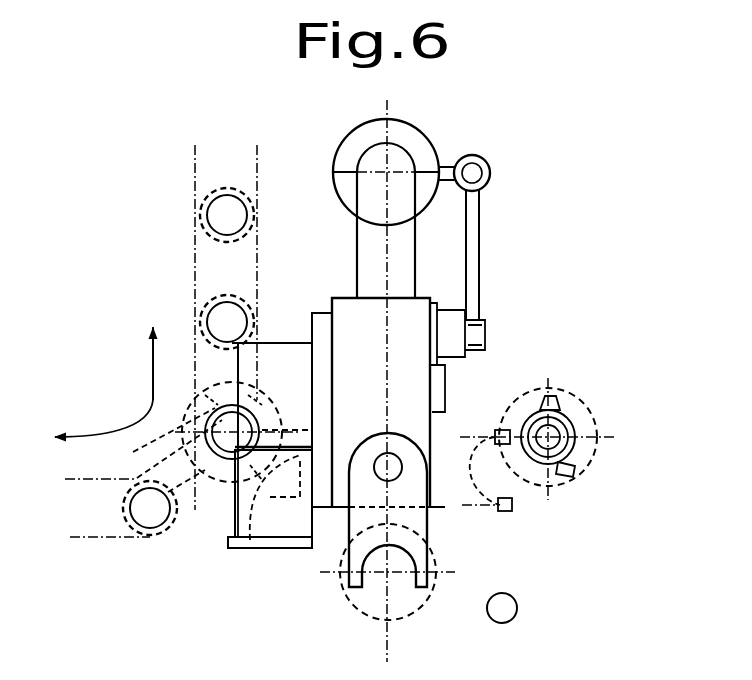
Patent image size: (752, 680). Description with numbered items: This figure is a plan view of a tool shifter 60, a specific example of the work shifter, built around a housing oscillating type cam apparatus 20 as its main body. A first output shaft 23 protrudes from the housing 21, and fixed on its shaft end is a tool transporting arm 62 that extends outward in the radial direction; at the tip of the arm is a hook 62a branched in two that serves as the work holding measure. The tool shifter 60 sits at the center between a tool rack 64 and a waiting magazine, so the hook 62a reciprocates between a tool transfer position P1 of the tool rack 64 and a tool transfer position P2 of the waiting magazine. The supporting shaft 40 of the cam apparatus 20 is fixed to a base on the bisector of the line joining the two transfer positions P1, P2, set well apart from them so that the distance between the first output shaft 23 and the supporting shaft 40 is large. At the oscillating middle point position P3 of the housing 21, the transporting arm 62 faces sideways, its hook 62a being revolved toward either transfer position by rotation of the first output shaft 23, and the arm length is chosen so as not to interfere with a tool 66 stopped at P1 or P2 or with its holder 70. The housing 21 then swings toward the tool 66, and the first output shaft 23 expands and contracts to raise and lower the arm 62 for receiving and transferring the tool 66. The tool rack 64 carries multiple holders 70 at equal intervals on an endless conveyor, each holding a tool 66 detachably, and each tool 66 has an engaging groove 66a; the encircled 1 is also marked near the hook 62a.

The circled reference one 1 is at (440, 583).
The housing oscillating type cam apparatus 20 is at (450, 385).
The housing 21 is at (440, 430).
The first output shaft 23 is at (398, 478).
The supporting shaft 40 is at (388, 172).
The tool shifter 60 is at (582, 201).
The tool transporting arm 62 is at (445, 533).
The hook 62a is at (303, 505).
The tool rack 64 is at (110, 292).
The tool 66 is at (180, 430).
The engaging groove 66a is at (265, 365).
The tool holder 70 is at (230, 300).
The tool transfer position of the tool rack P1 is at (213, 487).
The tool transfer position of the waiting magazine P2 is at (560, 445).
The oscillating middle point position P3 is at (384, 583).